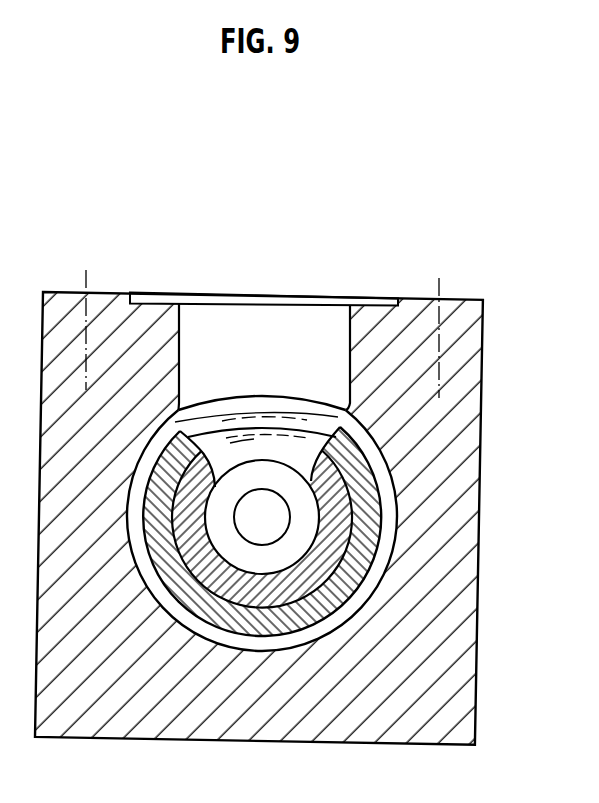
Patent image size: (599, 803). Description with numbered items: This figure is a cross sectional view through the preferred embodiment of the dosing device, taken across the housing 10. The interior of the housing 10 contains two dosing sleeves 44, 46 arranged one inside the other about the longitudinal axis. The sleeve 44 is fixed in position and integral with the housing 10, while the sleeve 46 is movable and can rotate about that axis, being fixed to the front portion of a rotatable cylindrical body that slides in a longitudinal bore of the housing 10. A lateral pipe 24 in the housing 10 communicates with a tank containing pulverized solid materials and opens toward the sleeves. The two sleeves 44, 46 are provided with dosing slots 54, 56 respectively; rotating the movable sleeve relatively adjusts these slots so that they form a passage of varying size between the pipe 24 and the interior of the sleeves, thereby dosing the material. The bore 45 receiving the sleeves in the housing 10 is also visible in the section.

The housing 10 is at (470, 313).
The lateral pipe 24 is at (318, 333).
The dosing sleeve 44 is at (210, 447).
The bore 45 is at (260, 652).
The dosing sleeve 46 is at (183, 443).
The dosing slot 54 is at (268, 450).
The dosing slot 56 is at (318, 420).